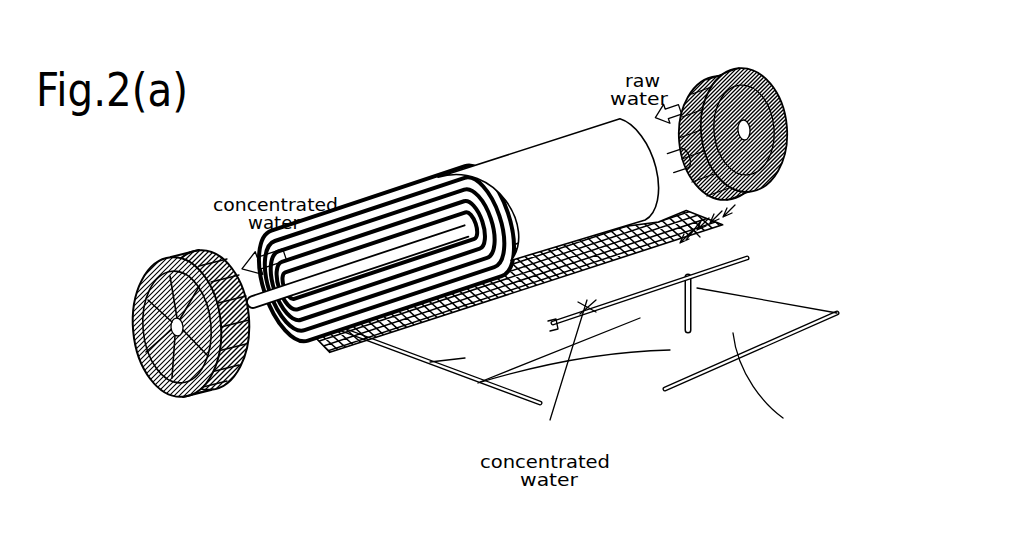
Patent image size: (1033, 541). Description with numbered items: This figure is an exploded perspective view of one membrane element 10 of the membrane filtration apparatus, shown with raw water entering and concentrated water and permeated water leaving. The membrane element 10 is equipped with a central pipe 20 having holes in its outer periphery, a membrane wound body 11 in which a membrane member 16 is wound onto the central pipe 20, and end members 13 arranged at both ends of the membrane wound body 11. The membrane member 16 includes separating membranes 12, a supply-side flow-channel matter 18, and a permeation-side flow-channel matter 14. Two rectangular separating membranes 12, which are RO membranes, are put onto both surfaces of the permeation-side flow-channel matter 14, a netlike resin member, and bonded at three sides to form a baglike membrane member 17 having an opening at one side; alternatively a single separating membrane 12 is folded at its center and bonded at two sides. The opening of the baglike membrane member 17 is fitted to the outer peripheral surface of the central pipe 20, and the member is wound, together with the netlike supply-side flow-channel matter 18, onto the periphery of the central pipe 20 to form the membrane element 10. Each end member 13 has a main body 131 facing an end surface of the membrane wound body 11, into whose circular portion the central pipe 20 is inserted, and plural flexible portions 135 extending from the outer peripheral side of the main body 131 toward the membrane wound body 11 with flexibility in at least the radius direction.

The membrane element 10 is at (520, 70).
The membrane wound body 11 is at (604, 138).
The separating membrane 12 is at (425, 380).
The end member 13 is at (782, 78).
The main body 131 is at (178, 400).
The flexible portion 135 is at (255, 362).
The permeation-side flow-channel matter 14 is at (745, 333).
The membrane member 16 is at (812, 186).
The baglike membrane member 17 is at (763, 272).
The supply-side flow-channel matter 18 is at (730, 228).
The central pipe 20 is at (265, 318).